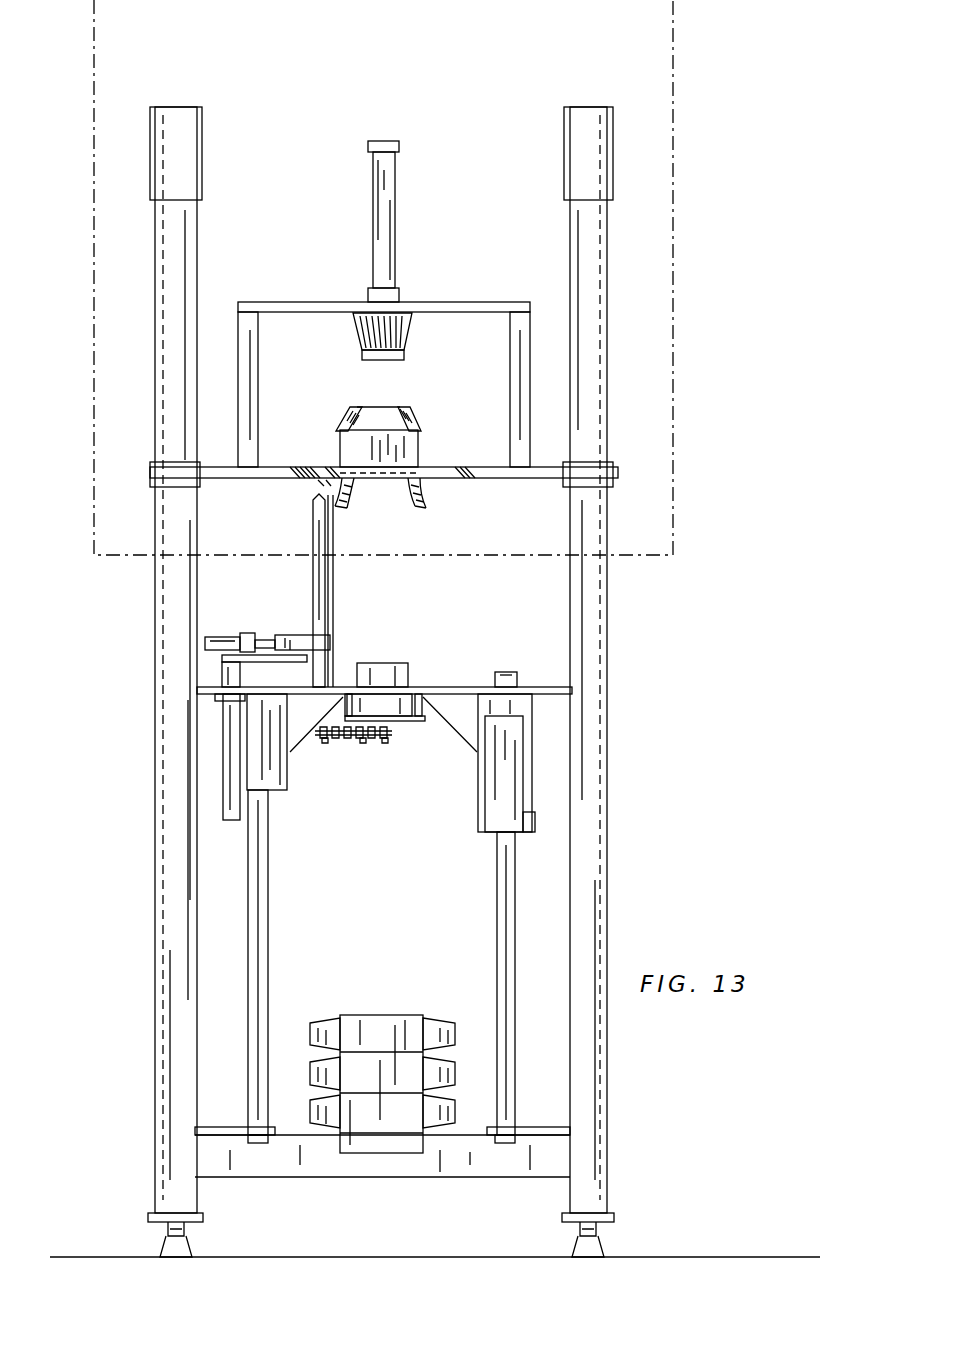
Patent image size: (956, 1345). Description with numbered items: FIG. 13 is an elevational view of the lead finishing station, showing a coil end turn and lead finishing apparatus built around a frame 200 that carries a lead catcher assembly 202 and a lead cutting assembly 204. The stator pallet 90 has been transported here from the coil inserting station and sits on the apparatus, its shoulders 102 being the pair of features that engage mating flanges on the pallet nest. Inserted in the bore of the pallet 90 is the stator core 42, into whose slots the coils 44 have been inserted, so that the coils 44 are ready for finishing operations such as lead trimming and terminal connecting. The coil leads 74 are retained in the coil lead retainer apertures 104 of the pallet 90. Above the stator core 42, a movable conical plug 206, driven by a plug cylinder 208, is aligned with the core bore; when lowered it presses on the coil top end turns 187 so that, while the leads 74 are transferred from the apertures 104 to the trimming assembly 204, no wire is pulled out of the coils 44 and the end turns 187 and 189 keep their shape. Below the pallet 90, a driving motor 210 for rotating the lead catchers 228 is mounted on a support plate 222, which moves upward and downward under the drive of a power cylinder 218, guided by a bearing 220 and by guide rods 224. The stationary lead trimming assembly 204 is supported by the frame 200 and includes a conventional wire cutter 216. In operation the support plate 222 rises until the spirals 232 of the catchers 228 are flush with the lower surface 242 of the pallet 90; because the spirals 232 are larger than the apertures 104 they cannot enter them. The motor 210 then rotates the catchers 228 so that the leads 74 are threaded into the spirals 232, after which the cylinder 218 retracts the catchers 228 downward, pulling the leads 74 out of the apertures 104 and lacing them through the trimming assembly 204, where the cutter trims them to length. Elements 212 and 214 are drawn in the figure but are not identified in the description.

The stator core 42 is at (407, 445).
The coils 44 is at (393, 397).
The coil leads 74 is at (337, 478).
The stator pallet 90 is at (445, 478).
The shoulders 102 is at (463, 470).
The coil lead retainer apertures 104 is at (320, 468).
The coil top end turns 187 is at (410, 412).
The coil end turns 189 is at (431, 490).
The frame 200 is at (597, 674).
The lead catcher assembly 202 is at (298, 562).
The lead cutting assembly 204 is at (215, 672).
The movable conical plug 206 is at (412, 336).
The plug cylinder 208 is at (386, 172).
The driving motor 210 is at (391, 665).
The chain drive 212 is at (358, 740).
The brace 214 is at (418, 722).
The wire cutter 216 is at (331, 650).
The power cylinder 218 is at (500, 795).
The bearing 220 is at (265, 772).
The support plate 222 is at (465, 687).
The guide rods 224 is at (500, 935).
The lead catchers 228 is at (317, 568).
The spirals 232 is at (320, 480).
The lower surface 242 is at (462, 485).